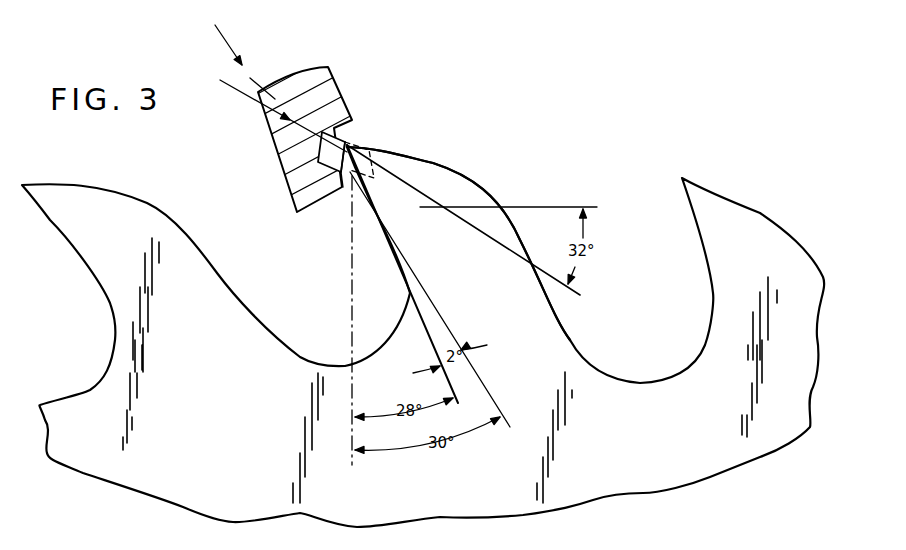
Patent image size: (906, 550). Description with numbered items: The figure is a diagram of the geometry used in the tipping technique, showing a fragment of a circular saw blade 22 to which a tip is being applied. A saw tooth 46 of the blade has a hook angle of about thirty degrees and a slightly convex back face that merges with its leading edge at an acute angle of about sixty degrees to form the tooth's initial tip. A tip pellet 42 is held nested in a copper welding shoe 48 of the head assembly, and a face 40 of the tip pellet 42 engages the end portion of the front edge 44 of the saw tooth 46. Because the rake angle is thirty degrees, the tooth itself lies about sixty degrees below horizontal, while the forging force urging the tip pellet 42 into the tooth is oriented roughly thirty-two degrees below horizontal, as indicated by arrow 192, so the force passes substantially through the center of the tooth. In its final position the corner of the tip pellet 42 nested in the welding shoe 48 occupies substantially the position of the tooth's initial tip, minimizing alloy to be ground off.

The saw blade 22 is at (240, 456).
The face 40 is at (338, 136).
The tip pellet 42 is at (346, 143).
The front edge 44 is at (352, 186).
The saw tooth 46 is at (465, 267).
The copper welding shoe 48 is at (268, 143).
The arrow 192 is at (517, 264).